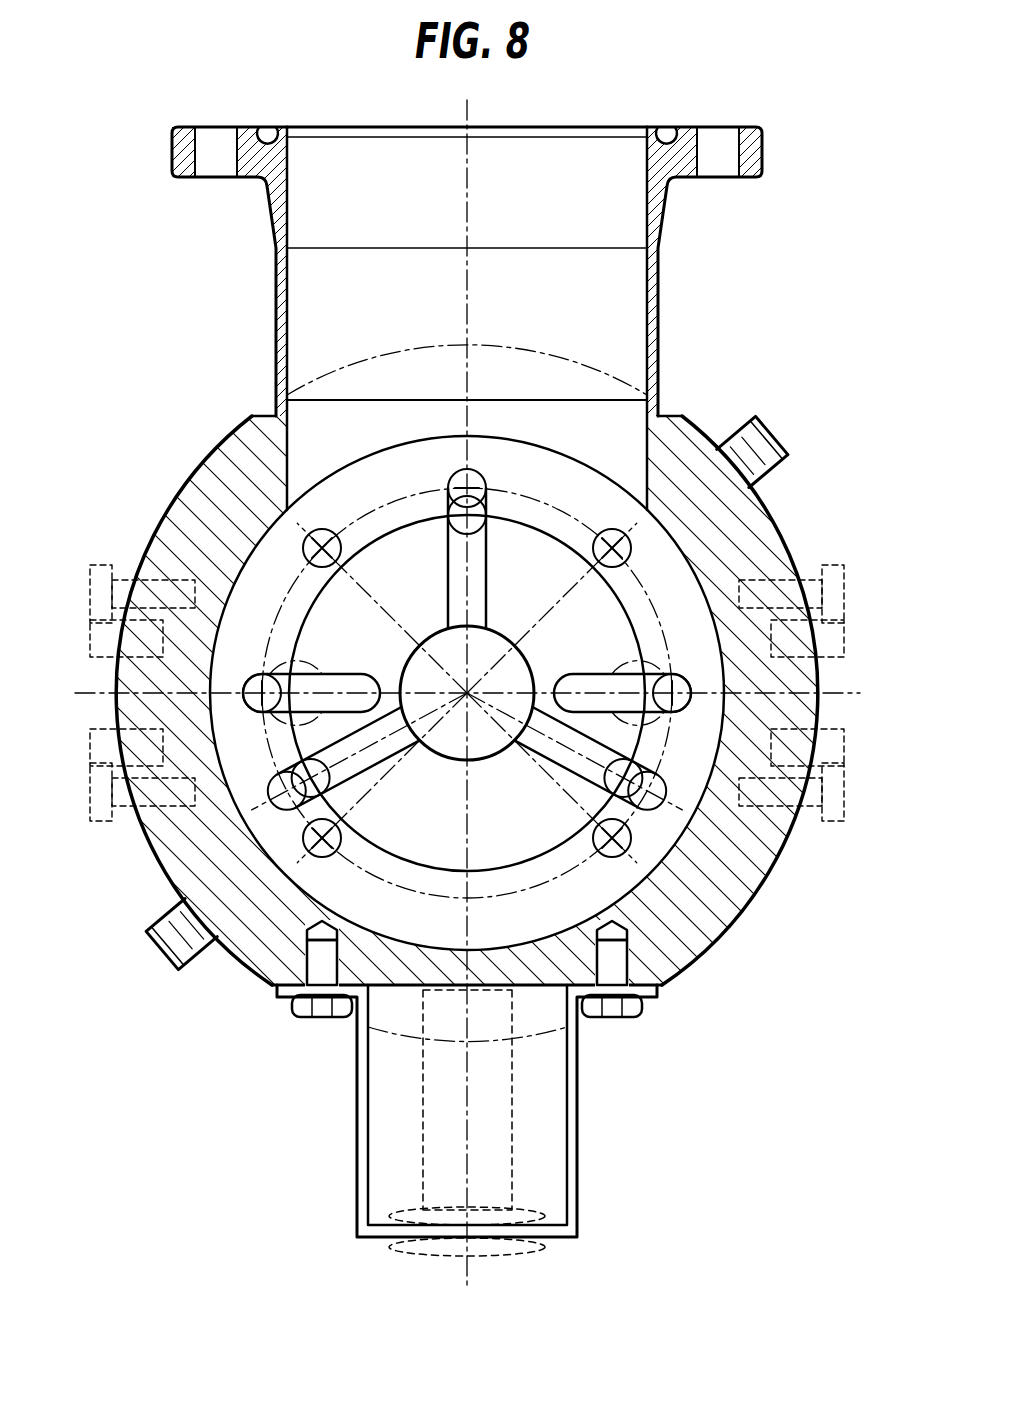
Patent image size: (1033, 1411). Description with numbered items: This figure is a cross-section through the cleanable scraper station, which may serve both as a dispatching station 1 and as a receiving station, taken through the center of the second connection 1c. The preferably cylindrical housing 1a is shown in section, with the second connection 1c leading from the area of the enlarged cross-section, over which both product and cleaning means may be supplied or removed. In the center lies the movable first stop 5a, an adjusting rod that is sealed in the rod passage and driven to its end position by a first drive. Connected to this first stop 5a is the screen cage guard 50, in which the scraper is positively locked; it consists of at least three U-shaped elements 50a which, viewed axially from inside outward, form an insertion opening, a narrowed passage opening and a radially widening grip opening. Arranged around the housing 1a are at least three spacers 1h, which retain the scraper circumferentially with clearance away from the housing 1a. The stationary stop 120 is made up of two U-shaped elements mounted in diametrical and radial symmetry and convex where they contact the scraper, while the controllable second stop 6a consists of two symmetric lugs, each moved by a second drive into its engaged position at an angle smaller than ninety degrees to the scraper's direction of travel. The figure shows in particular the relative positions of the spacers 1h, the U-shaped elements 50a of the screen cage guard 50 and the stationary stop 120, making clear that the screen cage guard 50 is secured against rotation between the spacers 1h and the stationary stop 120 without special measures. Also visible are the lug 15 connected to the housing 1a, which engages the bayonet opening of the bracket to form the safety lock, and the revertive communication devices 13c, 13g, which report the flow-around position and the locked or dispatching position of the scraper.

The dispatching station 1 is at (697, 962).
The housing 1a is at (682, 437).
The second connection 1c is at (653, 299).
The spacers 1h is at (318, 545).
The first stop 5a is at (443, 752).
The second stop 6a is at (297, 665).
The revertive communication device 13c is at (490, 1123).
The revertive communication device 13g is at (486, 1124).
The lug 15 is at (745, 435).
The screen cage guard 50 is at (703, 892).
The U-shaped elements 50a is at (474, 492).
The stationary stop 120 is at (257, 684).